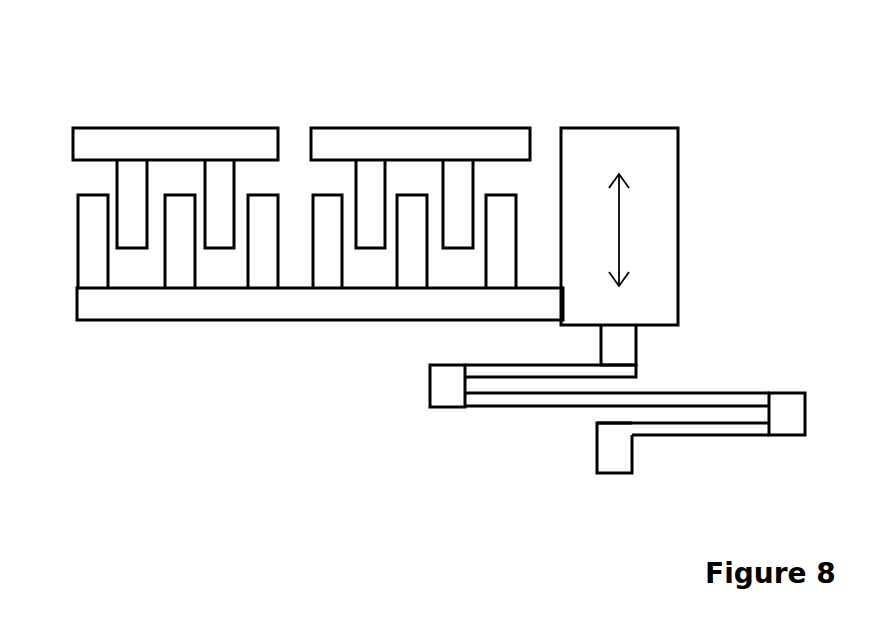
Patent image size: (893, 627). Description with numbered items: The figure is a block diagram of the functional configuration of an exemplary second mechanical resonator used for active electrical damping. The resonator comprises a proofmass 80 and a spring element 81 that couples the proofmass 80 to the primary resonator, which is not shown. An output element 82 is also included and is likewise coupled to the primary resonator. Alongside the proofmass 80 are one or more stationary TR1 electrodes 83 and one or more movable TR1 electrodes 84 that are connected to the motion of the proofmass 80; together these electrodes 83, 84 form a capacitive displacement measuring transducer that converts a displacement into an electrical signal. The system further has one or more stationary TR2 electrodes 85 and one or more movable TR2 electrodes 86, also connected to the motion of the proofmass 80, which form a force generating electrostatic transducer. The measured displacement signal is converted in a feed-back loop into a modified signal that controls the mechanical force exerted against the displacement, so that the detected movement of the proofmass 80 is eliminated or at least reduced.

The proofmass 80 is at (602, 128).
The spring element 81 is at (713, 395).
The output element 82 is at (617, 465).
The stationary TR1 electrodes 83 is at (167, 128).
The movable TR1 electrodes 84 is at (182, 273).
The stationary TR2 electrodes 85 is at (418, 128).
The movable TR2 electrodes 86 is at (413, 273).